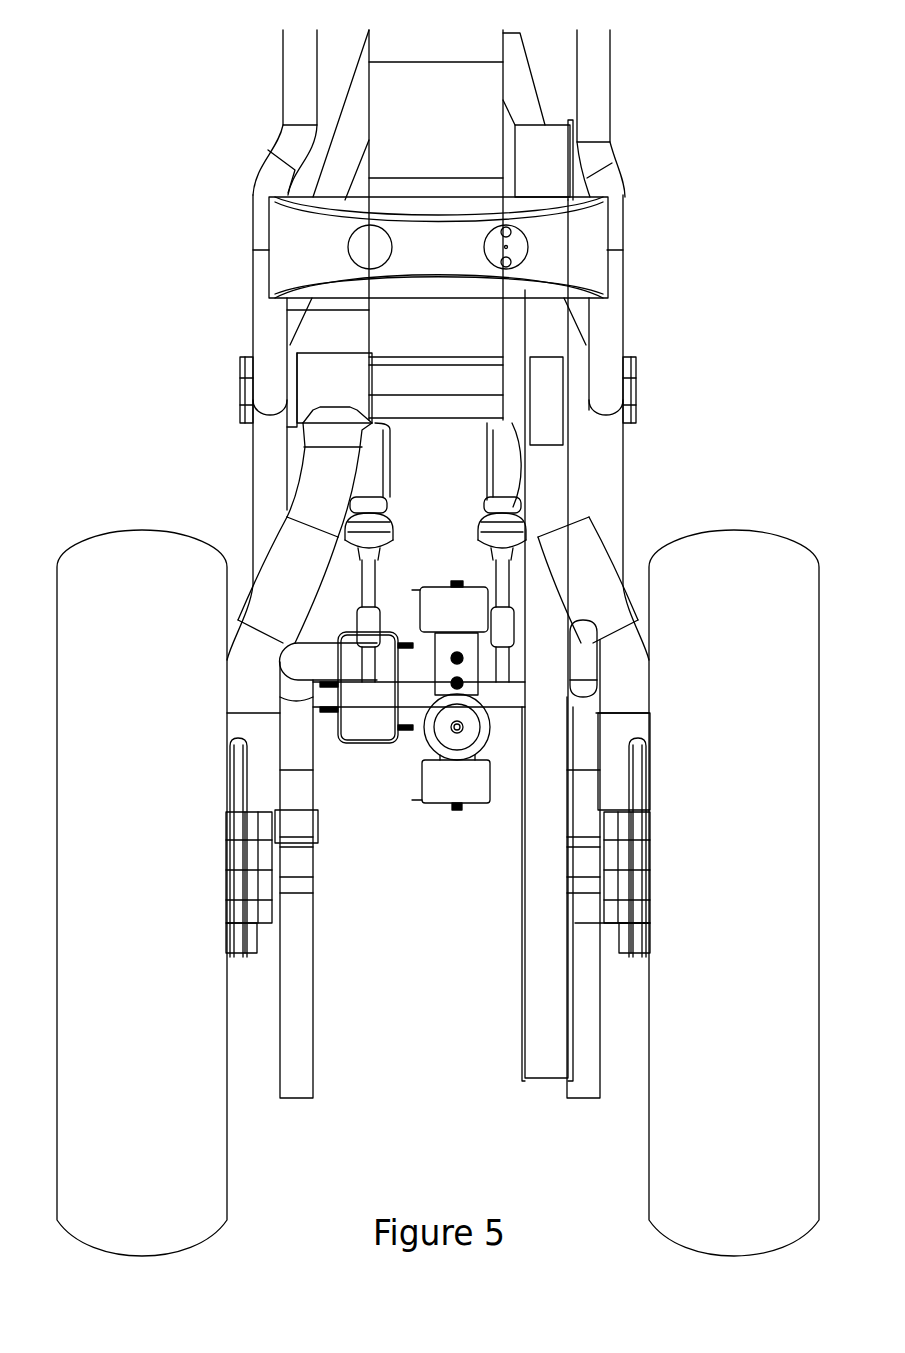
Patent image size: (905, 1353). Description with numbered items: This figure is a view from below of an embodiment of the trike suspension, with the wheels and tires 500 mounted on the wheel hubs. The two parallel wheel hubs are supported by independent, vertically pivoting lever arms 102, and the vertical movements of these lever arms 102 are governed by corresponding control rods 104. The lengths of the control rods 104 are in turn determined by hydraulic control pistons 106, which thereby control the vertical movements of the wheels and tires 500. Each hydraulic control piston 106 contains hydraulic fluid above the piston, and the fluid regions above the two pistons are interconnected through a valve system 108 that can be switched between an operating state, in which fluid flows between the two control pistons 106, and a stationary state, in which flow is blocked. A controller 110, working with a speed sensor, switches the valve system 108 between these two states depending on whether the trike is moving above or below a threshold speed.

The lever arm 102 is at (632, 600).
The control rod 104 is at (380, 587).
The hydraulic control piston 106 is at (387, 480).
The valve system 108 is at (438, 805).
The controller 110 is at (370, 743).
The wheels and tires 500 is at (749, 806).